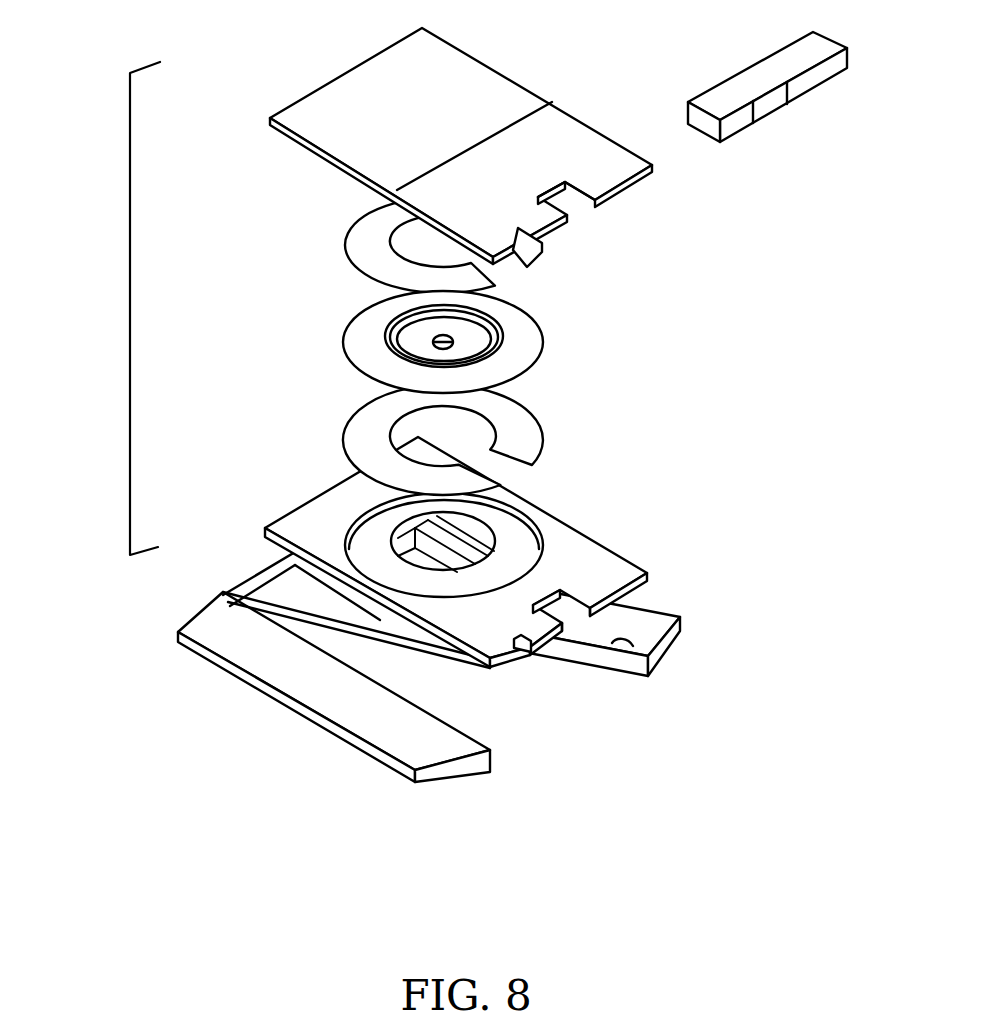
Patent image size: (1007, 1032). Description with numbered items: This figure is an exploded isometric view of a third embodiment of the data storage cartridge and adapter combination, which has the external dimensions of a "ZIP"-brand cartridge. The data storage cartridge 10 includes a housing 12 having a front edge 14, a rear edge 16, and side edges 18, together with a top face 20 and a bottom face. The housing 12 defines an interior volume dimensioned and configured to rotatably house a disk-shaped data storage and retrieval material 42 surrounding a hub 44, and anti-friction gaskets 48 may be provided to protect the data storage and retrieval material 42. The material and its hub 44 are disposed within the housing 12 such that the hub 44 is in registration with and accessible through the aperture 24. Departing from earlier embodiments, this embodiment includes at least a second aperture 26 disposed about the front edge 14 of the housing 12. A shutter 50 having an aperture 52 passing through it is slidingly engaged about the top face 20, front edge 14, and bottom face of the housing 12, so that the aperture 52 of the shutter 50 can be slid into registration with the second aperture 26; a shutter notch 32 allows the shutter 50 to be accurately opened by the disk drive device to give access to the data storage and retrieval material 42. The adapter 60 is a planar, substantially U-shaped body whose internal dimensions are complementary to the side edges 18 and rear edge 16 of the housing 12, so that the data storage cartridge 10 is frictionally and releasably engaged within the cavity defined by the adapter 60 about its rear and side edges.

The data storage cartridge 10 is at (130, 248).
The housing 12 is at (402, 432).
The front edge 14 is at (620, 195).
The rear edge 16 is at (509, 173).
The side edges 18 is at (310, 157).
The top face 20 is at (387, 130).
The aperture 24 is at (430, 565).
The second aperture 26 is at (575, 210).
The shutter notch 32 is at (542, 255).
The data storage and retrieval material 42 is at (401, 342).
The hub 44 is at (392, 348).
The anti-friction gaskets 48 is at (347, 231).
The shutter 50 is at (805, 120).
The aperture 52 is at (772, 103).
The adapter 60 is at (178, 632).